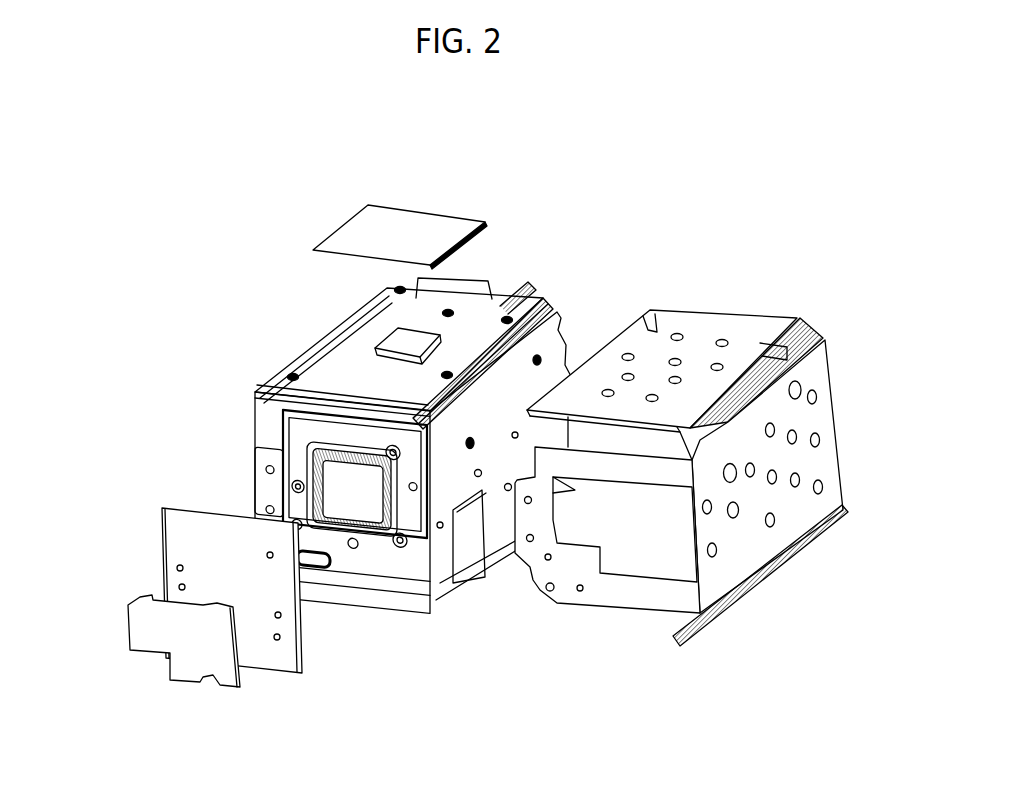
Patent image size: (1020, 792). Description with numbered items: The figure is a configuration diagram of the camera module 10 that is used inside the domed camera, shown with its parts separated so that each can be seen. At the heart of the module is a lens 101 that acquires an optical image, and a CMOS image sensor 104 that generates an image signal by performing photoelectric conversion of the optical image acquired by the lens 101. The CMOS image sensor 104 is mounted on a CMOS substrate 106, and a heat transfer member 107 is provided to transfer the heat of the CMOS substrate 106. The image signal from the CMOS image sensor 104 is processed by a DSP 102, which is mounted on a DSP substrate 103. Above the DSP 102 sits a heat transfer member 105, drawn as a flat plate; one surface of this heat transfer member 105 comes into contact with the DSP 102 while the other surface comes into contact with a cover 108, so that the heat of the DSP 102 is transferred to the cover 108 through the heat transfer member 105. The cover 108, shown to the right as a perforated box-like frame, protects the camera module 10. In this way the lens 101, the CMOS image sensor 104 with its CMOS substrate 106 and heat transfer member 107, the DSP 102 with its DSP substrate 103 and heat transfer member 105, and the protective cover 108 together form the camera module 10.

The camera module 10 is at (261, 143).
The lens 101 is at (575, 370).
The DSP 102 is at (387, 337).
The DSP substrate 103 is at (510, 297).
The CMOS image sensor 104 is at (362, 522).
The heat transfer member 105 is at (428, 212).
The CMOS substrate 106 is at (200, 505).
The heat transfer member 107 is at (155, 597).
The cover 108 is at (717, 307).